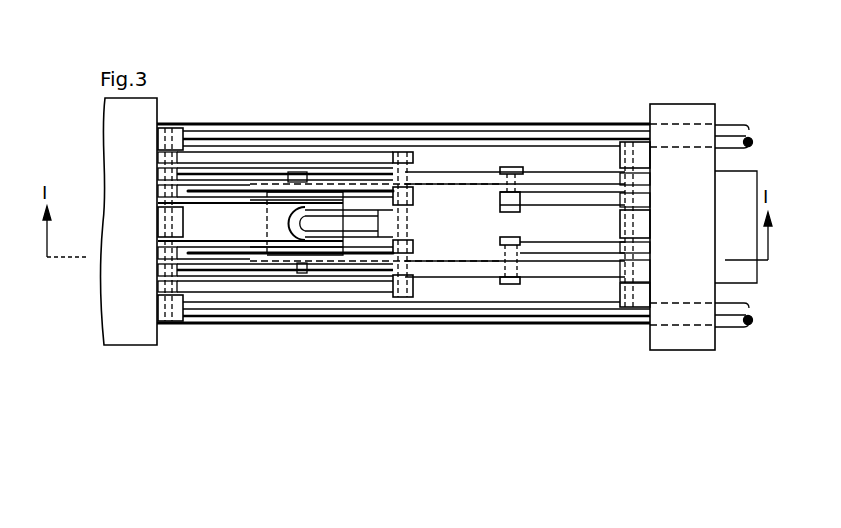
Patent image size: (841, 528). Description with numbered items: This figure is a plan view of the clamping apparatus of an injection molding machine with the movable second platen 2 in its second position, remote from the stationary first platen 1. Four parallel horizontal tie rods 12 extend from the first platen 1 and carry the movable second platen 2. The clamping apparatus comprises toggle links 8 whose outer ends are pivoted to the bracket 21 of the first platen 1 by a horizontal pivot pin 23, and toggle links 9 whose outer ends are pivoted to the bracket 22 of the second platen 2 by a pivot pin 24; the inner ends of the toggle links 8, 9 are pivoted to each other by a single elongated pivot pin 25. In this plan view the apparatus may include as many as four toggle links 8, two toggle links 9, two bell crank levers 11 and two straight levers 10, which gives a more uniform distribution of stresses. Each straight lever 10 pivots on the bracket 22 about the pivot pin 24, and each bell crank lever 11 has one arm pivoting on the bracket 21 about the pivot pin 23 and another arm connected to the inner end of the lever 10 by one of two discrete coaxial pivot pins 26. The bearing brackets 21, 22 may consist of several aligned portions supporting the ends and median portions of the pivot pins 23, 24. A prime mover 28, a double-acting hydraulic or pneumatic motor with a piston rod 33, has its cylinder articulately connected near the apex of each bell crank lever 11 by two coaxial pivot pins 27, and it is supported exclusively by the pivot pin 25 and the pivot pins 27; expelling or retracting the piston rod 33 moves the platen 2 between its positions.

The stationary first platen 1 is at (137, 330).
The movable second platen 2 is at (678, 336).
The toggle link 8 is at (232, 198).
The toggle link 9 is at (452, 177).
The straight lever 10 is at (545, 200).
The bell crank lever 11 is at (293, 172).
The tie rods 12 is at (385, 124).
The bracket 21 is at (172, 128).
The bracket 22 is at (640, 150).
The pivot pin 23 is at (168, 325).
The pivot pin 24 is at (630, 330).
The pivot pin 25 is at (398, 297).
The pivot pin 26 is at (505, 170).
The pivot pin 27 is at (332, 175).
The prime mover 28 is at (250, 230).
The piston rod 33 is at (368, 228).